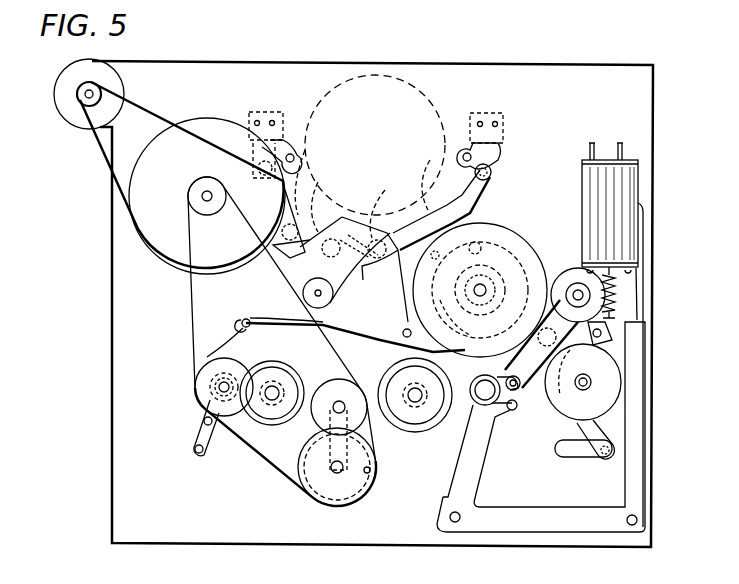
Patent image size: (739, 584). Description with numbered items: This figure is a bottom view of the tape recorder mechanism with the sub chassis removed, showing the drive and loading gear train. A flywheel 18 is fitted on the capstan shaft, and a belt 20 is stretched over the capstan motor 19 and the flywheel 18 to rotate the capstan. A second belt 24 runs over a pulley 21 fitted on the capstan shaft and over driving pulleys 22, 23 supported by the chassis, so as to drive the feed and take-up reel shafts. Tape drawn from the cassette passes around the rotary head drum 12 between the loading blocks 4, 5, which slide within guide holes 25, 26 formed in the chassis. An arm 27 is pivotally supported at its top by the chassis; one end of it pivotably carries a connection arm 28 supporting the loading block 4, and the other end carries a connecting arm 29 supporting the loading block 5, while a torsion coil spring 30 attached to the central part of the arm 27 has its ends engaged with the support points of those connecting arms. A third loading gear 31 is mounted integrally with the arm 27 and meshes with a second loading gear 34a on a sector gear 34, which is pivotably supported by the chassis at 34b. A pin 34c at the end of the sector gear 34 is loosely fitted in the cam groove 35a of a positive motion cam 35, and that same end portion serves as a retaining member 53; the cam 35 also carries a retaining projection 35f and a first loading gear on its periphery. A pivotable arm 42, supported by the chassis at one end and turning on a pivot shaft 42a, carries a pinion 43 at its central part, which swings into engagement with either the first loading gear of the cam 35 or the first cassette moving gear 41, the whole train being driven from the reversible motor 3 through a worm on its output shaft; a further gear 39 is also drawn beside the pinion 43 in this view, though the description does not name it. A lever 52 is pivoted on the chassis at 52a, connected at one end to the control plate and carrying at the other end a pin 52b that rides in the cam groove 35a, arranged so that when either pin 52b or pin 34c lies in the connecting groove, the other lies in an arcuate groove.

The reversible motor 3 is at (627, 190).
The loading block 4 is at (497, 150).
The loading block 5 is at (283, 140).
The rotary head drum 12 is at (430, 100).
The flywheel 18 is at (143, 213).
The capstan motor 19 is at (67, 101).
The belt 20 is at (107, 150).
The pulley 21 is at (204, 178).
The driving pulley 22 is at (370, 488).
The driving pulley 23 is at (197, 386).
The belt 24 is at (190, 292).
The guide hole 25 is at (475, 220).
The guide hole 26 is at (308, 218).
The arm 27 is at (373, 223).
The connection arm 28 is at (425, 197).
The connecting arm 29 is at (305, 185).
The torsion coil spring 30 is at (328, 233).
The third loading gear 31 is at (320, 303).
The sector gear 34 is at (372, 362).
The second loading gear 34a is at (300, 283).
The pivot 34b is at (405, 330).
The pin 34c is at (462, 370).
The positive motion cam 35 is at (528, 273).
The cam groove 35a is at (480, 224).
The retaining projection 35f is at (488, 252).
The gear 39 is at (591, 382).
The first cassette moving gear 41 is at (613, 400).
The pivotable arm 42 is at (498, 400).
The pivot shaft 42a is at (583, 293).
The pinion 43 is at (570, 353).
The lever 52 is at (610, 437).
The pivot 52a is at (615, 328).
The pin 52b is at (458, 317).
The retaining member 53 is at (495, 425).